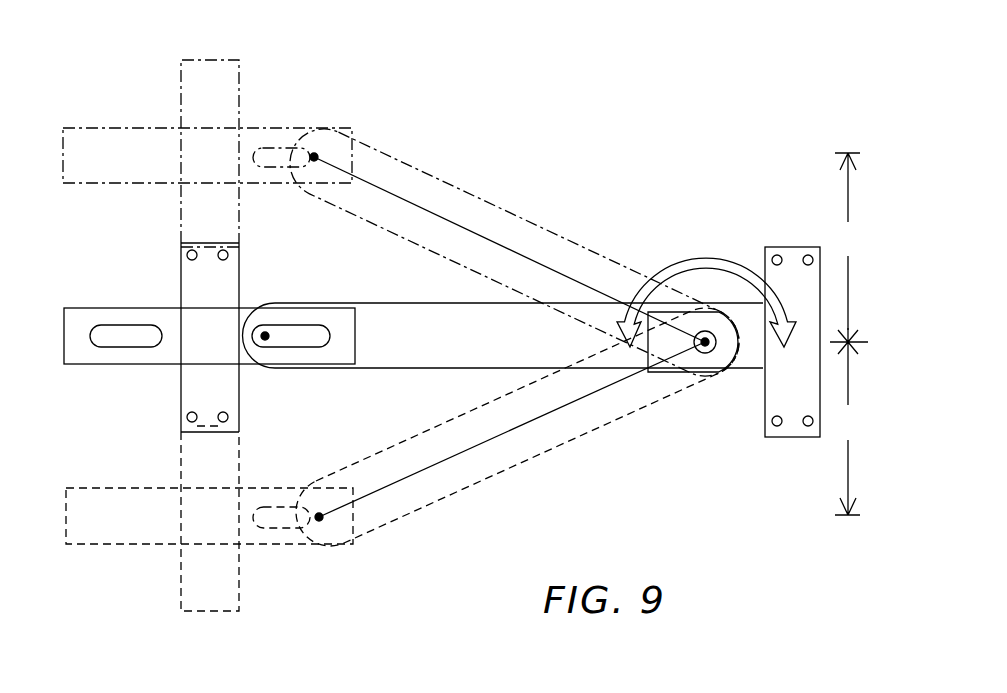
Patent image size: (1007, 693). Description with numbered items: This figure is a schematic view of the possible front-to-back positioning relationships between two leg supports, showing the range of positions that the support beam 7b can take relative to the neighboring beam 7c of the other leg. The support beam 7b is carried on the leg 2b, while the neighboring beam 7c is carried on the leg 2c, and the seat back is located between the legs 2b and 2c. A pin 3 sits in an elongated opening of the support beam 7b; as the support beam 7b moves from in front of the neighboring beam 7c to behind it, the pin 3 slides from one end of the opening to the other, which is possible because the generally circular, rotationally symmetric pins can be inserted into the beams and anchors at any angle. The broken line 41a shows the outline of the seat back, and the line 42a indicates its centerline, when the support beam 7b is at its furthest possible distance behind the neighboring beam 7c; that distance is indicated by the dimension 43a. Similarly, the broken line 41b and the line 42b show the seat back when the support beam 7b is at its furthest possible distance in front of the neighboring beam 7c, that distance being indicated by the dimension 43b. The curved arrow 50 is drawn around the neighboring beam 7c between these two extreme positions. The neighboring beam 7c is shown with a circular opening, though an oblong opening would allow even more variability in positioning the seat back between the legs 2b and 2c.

The leg 2b is at (163, 175).
The pin 3 is at (316, 153).
The support beam 7b is at (270, 170).
The neighboring beam 7c is at (743, 360).
The broken line 41a is at (587, 247).
The broken line 41b is at (633, 410).
The line 42a is at (450, 218).
The line 42b is at (533, 423).
The rotation direction arrow 50 is at (708, 258).
The distance 43a is at (851, 254).
The distance 43b is at (852, 435).
The leg 2c is at (788, 418).